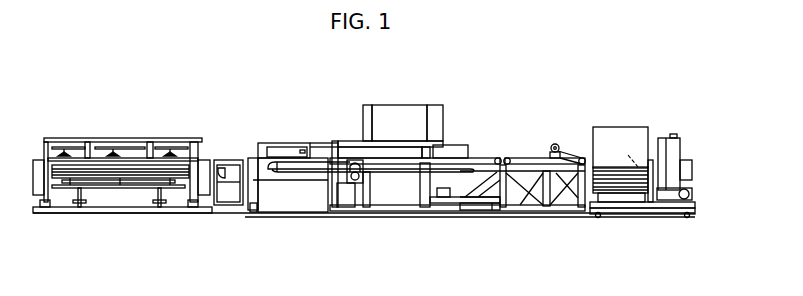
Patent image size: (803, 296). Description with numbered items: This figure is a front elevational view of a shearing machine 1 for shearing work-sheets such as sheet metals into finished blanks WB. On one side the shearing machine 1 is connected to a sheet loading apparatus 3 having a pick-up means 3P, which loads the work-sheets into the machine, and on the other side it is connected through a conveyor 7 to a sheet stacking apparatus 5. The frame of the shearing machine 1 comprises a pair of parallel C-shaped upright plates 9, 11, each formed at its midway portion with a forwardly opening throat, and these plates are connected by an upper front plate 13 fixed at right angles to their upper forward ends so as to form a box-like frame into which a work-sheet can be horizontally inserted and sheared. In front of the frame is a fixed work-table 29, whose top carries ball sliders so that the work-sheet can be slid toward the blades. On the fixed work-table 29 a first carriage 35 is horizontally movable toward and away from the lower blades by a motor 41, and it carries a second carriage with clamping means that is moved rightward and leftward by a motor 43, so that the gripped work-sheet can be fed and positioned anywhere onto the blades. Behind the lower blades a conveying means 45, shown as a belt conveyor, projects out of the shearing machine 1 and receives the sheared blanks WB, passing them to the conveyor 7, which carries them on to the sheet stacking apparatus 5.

The shearing machine 1 is at (364, 130).
The sheet loading apparatus 3 is at (122, 139).
The pick-up means 3P is at (63, 147).
The fixed work-table 29 is at (250, 157).
The motor 43 is at (280, 141).
The C-shaped upright plate 9 is at (365, 108).
The upper front plate 13 is at (392, 113).
The C-shaped upright plate 11 is at (428, 112).
The motor 41 is at (355, 184).
The first carriage 35 is at (465, 143).
The conveying means 45 is at (498, 157).
The conveyor 7 is at (522, 138).
The blanks WB is at (642, 172).
The sheet stacking apparatus 5 is at (674, 134).